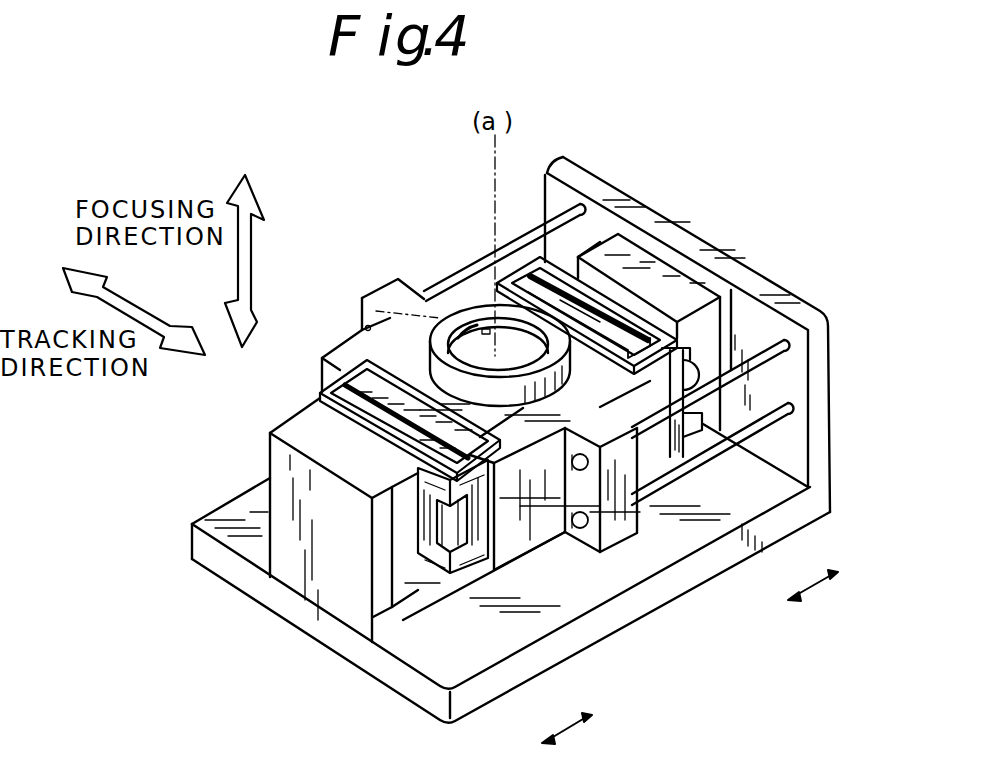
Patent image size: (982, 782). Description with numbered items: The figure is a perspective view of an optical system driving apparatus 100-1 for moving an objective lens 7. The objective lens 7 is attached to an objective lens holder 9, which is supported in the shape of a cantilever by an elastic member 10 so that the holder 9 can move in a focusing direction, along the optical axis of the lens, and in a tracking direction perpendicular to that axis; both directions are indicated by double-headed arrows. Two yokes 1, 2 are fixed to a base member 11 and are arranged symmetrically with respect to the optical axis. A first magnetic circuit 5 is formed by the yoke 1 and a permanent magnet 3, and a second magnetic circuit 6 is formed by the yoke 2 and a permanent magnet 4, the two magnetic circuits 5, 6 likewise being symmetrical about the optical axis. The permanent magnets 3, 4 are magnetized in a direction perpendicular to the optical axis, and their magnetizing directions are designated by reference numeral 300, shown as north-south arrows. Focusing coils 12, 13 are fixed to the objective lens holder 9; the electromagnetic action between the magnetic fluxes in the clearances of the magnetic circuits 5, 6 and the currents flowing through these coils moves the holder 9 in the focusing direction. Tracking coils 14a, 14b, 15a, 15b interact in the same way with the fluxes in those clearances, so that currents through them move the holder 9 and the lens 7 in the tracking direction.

The optical system driving apparatus 100-1 is at (362, 260).
The yoke 1 is at (333, 597).
The yoke 2 is at (667, 273).
The permanent magnet 3 is at (387, 457).
The permanent magnet 4 is at (631, 281).
The magnetic circuit 5 is at (247, 524).
The magnetic circuit 6 is at (698, 276).
The objective lens 7 is at (477, 322).
The objective lens holder 9 is at (413, 333).
The elastic member 10 is at (525, 243).
The base member 11 is at (387, 670).
The focusing coil 12 is at (267, 438).
The focusing coil 13 is at (596, 302).
The tracking coil 14a is at (440, 570).
The tracking coil 14b is at (323, 410).
The tracking coil 15a is at (727, 381).
The tracking coil 15b is at (543, 256).
The magnetizing direction 300 is at (577, 727).